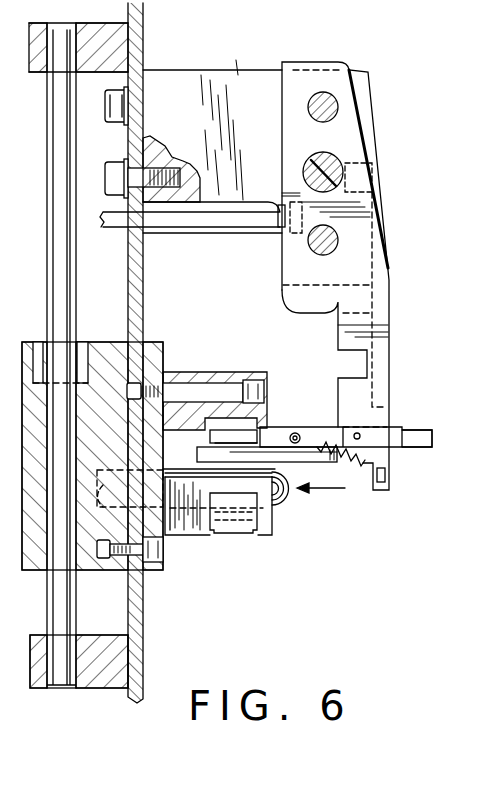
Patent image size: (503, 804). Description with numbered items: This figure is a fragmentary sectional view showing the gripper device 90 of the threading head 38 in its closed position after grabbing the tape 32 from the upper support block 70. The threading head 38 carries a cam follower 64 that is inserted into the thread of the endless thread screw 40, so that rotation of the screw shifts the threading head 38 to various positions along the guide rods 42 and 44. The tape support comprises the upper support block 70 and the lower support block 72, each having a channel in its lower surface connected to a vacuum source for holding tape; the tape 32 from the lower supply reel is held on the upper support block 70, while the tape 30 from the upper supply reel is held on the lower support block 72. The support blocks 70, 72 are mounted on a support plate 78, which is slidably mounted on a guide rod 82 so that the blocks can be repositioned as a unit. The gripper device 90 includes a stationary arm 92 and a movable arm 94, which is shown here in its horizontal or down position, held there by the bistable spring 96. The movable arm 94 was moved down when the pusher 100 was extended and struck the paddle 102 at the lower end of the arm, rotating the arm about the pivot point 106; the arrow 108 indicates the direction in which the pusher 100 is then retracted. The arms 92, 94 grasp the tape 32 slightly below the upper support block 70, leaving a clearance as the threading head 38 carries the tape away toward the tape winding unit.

The tape 30 is at (233, 517).
The tape 32 is at (200, 437).
The threading head 38 is at (300, 62).
The endless thread screw 40 is at (330, 160).
The guide rod 42 is at (332, 110).
The guide rod 44 is at (330, 240).
The cam follower 64 is at (372, 166).
The upper support block 70 is at (172, 377).
The lower support block 72 is at (263, 537).
The support plate 78 is at (162, 518).
The guide rod 82 is at (52, 172).
The gripper device 90 is at (402, 417).
The stationary arm 92 is at (240, 445).
The movable arm 94 is at (213, 455).
The bistable spring 96 is at (363, 467).
The pusher 100 is at (283, 500).
The paddle 102 is at (427, 446).
The pivot point 106 is at (362, 436).
The arrow 108 is at (330, 492).